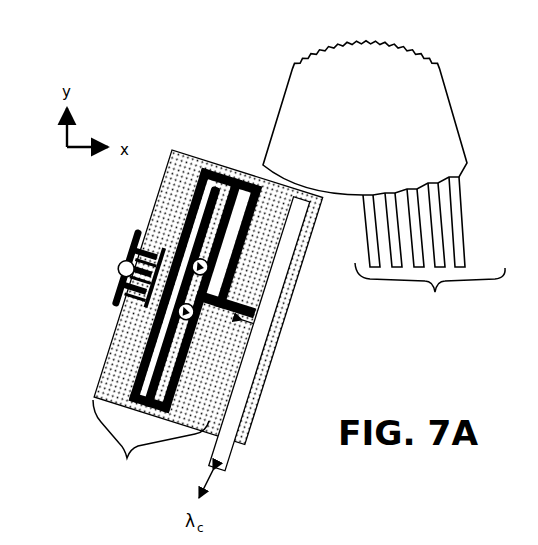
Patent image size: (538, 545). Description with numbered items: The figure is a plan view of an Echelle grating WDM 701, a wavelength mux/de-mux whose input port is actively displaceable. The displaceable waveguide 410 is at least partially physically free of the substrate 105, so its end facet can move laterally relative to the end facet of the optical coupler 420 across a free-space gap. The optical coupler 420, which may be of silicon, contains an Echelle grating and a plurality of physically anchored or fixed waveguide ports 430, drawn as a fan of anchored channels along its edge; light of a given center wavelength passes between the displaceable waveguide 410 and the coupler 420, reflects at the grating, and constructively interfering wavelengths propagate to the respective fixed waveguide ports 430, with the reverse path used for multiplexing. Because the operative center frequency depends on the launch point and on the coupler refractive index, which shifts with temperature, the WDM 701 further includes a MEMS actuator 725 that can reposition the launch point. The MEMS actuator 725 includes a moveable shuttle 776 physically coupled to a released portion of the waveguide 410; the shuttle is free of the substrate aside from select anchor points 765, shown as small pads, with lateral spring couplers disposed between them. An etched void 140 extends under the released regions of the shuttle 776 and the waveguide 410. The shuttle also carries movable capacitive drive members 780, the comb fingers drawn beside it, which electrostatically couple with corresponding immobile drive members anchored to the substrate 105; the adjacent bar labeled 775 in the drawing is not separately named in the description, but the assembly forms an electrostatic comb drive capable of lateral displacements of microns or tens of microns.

The Echelle grating WDM 701 is at (224, 50).
The optical coupler 420 is at (377, 121).
The fixed waveguide ports 430 is at (430, 249).
The displaceable waveguide 410 is at (284, 342).
The moveable shuttle 776 is at (236, 300).
The anchor points 765 is at (136, 260).
The bus bar 775 is at (105, 240).
The movable capacitive drive members 780 is at (147, 265).
The etched void 140 is at (208, 297).
The MEMS actuator 725 is at (151, 442).
The substrate 105 is at (390, 361).